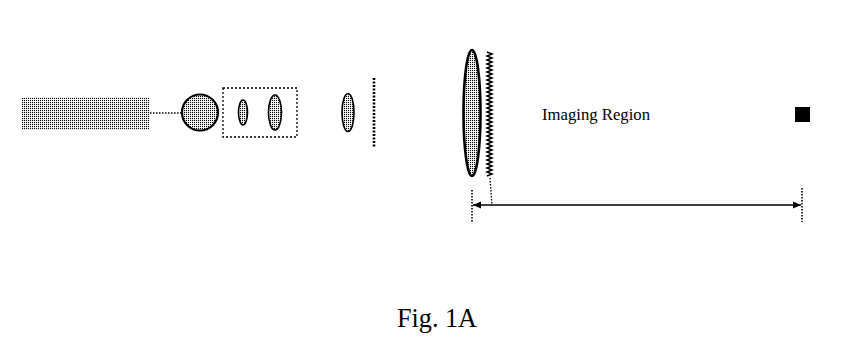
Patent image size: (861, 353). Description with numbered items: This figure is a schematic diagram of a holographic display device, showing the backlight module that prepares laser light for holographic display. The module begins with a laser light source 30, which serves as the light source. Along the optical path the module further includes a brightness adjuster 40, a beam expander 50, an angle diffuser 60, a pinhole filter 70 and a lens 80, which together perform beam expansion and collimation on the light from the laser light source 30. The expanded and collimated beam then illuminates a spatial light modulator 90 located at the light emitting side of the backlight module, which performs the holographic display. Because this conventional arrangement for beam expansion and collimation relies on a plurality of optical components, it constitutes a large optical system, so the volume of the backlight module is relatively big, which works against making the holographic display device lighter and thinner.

The laser light source 30 is at (102, 89).
The brightness adjuster 40 is at (213, 149).
The beam expander 50 is at (261, 85).
The angle diffuser 60 is at (372, 82).
The pinhole filter 70 is at (396, 133).
The lens 80 is at (492, 95).
The spatial light modulator 90 is at (473, 207).